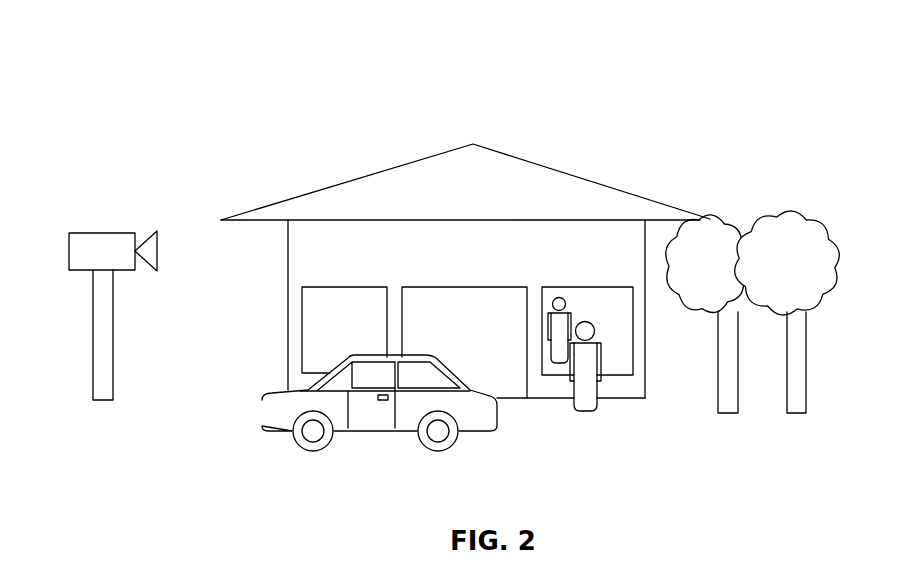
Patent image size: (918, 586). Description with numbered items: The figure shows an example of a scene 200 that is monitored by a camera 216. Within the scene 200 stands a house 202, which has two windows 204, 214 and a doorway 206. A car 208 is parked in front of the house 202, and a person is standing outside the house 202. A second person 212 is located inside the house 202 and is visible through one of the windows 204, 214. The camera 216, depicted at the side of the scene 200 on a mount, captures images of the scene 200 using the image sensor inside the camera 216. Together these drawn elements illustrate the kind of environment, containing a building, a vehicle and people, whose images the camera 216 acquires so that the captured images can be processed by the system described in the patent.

The scene 200 is at (613, 134).
The house 202 is at (479, 300).
The window 204 is at (633, 332).
The doorway 206 is at (477, 312).
The car 208 is at (260, 405).
The second person 212 is at (560, 297).
The window 214 is at (302, 330).
The camera 216 is at (102, 232).